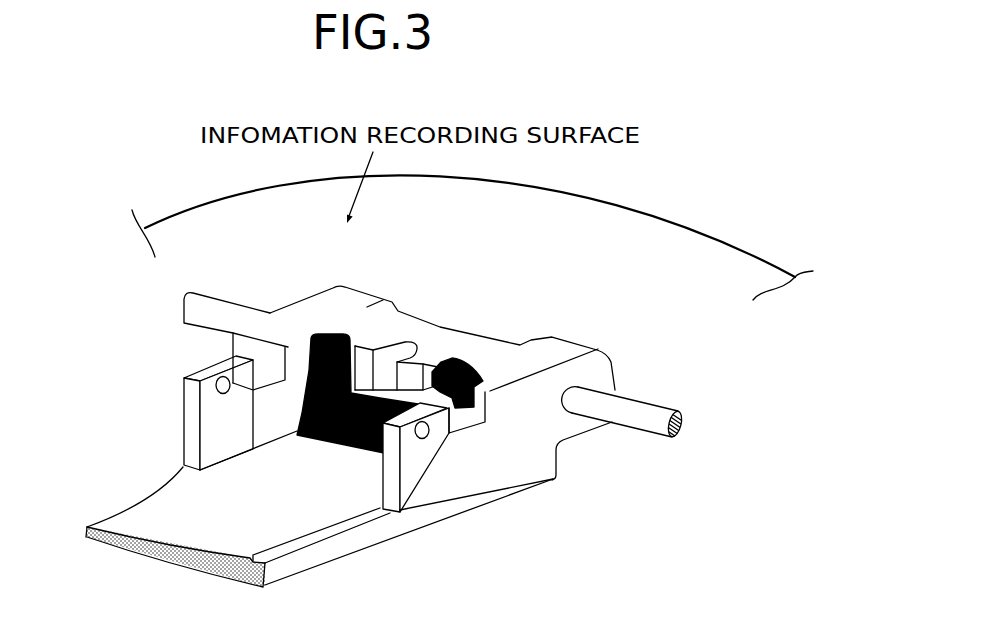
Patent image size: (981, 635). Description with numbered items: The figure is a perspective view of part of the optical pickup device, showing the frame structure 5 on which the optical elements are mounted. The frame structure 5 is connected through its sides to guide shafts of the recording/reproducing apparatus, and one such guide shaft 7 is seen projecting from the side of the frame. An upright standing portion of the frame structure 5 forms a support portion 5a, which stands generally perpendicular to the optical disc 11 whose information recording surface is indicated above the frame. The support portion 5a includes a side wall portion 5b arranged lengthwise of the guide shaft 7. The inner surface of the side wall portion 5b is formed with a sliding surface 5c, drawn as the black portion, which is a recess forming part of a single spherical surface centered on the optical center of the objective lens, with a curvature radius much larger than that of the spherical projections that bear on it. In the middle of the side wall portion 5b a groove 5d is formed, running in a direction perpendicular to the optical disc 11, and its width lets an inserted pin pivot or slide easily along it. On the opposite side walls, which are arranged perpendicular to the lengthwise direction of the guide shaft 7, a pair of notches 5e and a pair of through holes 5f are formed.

The frame structure 5 is at (92, 395).
The support portion 5a is at (507, 407).
The side wall portion 5b is at (441, 340).
The sliding surface 5c is at (333, 439).
The groove 5d is at (383, 340).
The notch 5e is at (243, 344).
The through hole 5f is at (227, 393).
The guide shaft 7 is at (648, 412).
The optical disc 11 is at (654, 244).